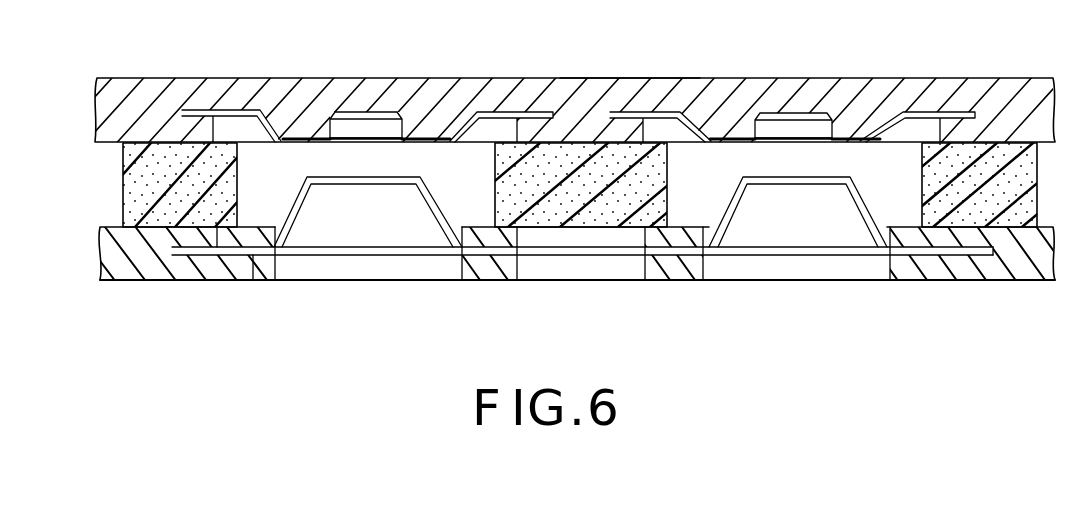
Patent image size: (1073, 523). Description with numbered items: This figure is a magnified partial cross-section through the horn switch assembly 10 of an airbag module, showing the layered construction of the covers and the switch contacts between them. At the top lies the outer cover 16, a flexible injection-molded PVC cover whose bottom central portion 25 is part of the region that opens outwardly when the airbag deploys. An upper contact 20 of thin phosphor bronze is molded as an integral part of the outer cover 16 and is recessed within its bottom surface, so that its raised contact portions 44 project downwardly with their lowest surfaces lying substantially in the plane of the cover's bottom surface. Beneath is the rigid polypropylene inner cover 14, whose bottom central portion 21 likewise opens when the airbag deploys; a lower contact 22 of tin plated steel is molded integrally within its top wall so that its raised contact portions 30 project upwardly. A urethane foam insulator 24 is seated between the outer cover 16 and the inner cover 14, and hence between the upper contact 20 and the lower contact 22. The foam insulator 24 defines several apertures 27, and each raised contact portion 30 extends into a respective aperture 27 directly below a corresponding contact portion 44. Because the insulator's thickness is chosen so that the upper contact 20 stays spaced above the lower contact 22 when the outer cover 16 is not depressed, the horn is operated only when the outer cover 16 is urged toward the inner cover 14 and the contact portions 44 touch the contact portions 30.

The horn switch assembly 10 is at (427, 58).
The inner cover 14 is at (688, 278).
The outer cover 16 is at (308, 88).
The upper contact 20 is at (500, 118).
The bottom central portion 21 is at (580, 283).
The lower contact 22 is at (253, 282).
The urethane foam insulator 24 is at (123, 168).
The bottom central portion 25 is at (637, 77).
The apertures 27 is at (495, 173).
The raised contact portions 30 is at (392, 176).
The raised contact portions 44 is at (308, 147).